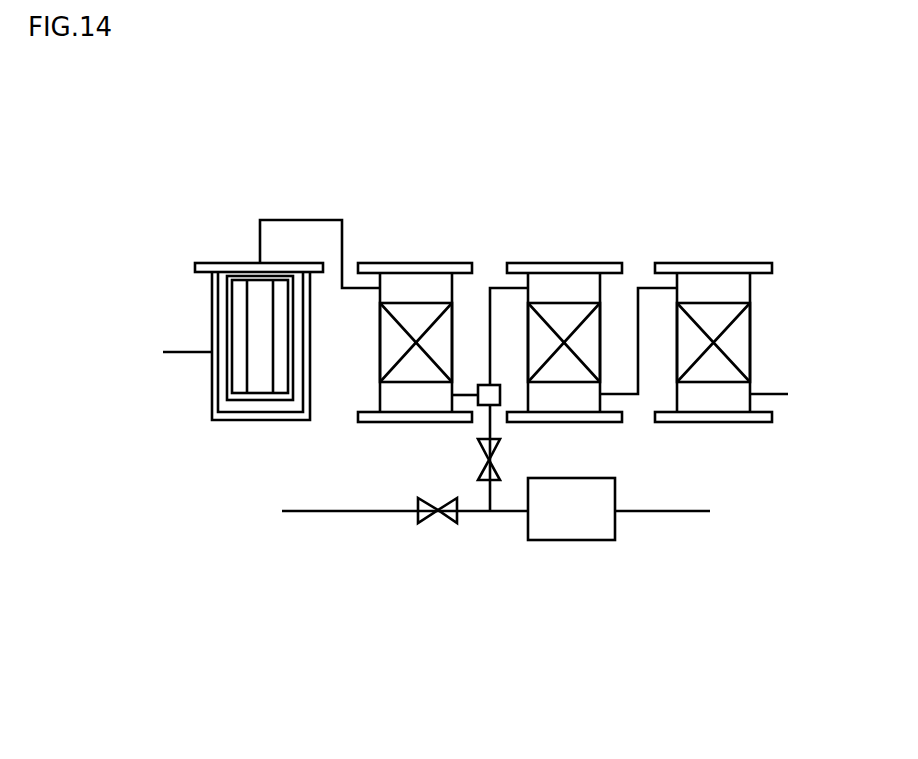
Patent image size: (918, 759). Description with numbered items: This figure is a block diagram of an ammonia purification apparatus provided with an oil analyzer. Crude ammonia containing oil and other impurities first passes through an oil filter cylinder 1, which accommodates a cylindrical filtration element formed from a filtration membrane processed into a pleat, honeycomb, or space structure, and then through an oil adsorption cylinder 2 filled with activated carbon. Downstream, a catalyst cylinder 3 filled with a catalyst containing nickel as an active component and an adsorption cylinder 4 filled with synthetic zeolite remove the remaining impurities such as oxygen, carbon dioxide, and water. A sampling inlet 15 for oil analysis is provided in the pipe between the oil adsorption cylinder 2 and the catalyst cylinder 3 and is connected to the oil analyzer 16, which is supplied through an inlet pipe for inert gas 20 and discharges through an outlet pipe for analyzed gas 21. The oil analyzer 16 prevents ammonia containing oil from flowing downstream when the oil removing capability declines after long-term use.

The oil filter cylinder 1 is at (280, 263).
The oil adsorption cylinder 2 is at (413, 263).
The catalyst cylinder 3 is at (562, 263).
The adsorption cylinder 4 is at (712, 263).
The sampling inlet 15 is at (480, 407).
The oil analyzer 16 is at (616, 513).
The inlet pipe for inert gas 20 is at (347, 511).
The outlet pipe for analyzed gas 21 is at (693, 512).